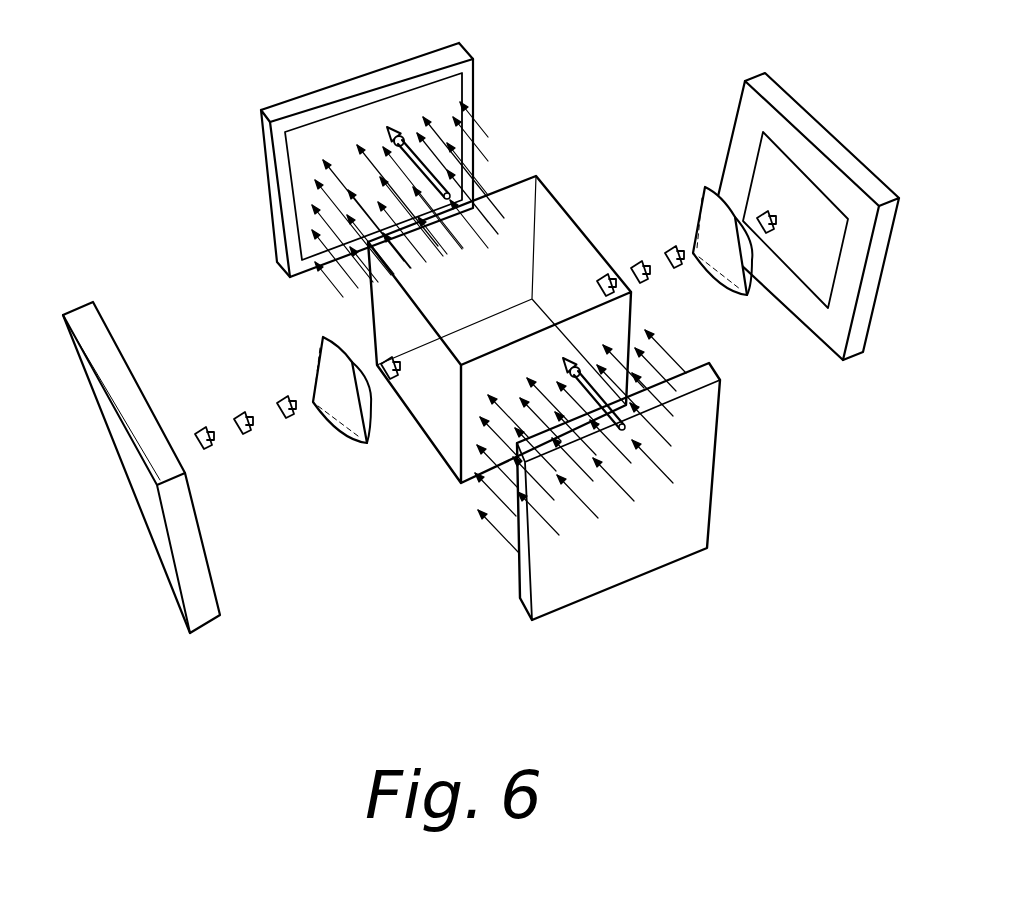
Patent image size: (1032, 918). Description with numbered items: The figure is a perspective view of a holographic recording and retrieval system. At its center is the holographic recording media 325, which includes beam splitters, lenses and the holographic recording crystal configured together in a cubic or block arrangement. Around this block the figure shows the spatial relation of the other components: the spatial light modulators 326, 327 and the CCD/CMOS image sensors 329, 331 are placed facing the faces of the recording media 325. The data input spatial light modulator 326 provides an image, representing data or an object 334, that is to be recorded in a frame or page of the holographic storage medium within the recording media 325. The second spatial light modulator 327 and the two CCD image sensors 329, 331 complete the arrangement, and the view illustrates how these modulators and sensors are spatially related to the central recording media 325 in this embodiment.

The holographic recording media 325 is at (537, 163).
The data input spatial light modulator 326 is at (893, 238).
The spatial light modulator 327 is at (709, 513).
The CCD/CMOS image sensor 329 is at (282, 102).
The CCD/CMOS image sensor 331 is at (115, 343).
The object 334 is at (698, 196).